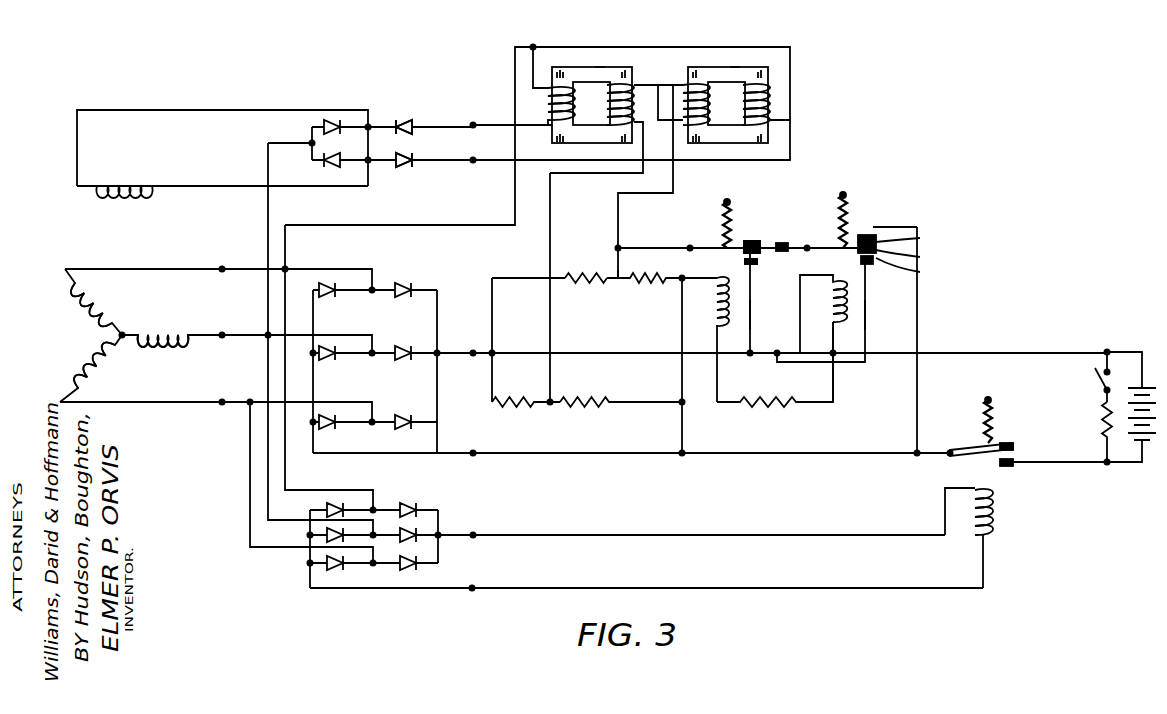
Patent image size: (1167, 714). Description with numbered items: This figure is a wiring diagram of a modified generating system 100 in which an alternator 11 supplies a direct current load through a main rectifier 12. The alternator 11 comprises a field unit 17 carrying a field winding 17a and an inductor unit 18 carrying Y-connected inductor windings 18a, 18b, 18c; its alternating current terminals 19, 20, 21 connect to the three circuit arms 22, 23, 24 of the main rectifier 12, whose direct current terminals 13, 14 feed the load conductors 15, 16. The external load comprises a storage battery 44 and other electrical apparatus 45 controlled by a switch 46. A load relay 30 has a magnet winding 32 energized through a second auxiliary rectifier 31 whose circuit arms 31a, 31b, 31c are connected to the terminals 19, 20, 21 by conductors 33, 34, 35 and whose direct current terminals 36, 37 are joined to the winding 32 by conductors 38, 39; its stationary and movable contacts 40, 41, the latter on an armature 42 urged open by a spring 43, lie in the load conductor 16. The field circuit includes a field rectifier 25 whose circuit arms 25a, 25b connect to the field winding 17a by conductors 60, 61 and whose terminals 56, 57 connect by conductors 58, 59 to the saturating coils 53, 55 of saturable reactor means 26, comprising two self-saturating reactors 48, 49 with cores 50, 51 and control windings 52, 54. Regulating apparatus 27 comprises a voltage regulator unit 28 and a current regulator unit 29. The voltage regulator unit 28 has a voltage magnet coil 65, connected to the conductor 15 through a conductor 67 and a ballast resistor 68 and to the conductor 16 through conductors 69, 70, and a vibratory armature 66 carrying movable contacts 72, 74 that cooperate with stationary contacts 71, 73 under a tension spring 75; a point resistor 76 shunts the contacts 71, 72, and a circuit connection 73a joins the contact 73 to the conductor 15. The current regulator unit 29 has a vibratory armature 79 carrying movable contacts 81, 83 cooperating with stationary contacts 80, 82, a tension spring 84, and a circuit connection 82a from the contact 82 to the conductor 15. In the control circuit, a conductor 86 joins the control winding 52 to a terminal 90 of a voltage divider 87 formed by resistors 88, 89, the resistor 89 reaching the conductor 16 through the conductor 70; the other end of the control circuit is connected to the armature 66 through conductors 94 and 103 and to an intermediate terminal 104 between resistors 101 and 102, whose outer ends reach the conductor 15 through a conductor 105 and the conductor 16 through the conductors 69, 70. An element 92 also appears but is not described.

The alternating current generator 11 is at (160, 269).
The main rectifier 12 is at (375, 370).
The direct current terminal 13 is at (473, 353).
The direct current terminal 14 is at (475, 453).
The load conductor 15 is at (632, 353).
The load conductor 16 is at (613, 453).
The field unit 17 is at (115, 173).
The field winding 17a is at (118, 192).
The inductor unit 18 is at (133, 335).
The inductor winding 18a is at (105, 300).
The inductor winding 18b is at (168, 348).
The inductor winding 18c is at (100, 365).
The alternating current terminal 19 is at (222, 269).
The alternating current terminal 20 is at (222, 335).
The alternating current terminal 21 is at (222, 402).
The circuit arm 22 is at (390, 290).
The circuit arm 23 is at (388, 353).
The circuit arm 24 is at (390, 422).
The field rectifier 25 is at (370, 143).
The circuit arm 25a is at (373, 127).
The circuit arm 25b is at (372, 162).
The saturable reactor means 26 is at (600, 66).
The regulating apparatus 27 is at (816, 313).
The voltage regulator unit 28 is at (733, 305).
The current regulator unit 29 is at (852, 251).
The load relay 30 is at (966, 463).
The second auxiliary rectifier 31 is at (374, 545).
The circuit arm 31a is at (385, 510).
The circuit arm 31b is at (383, 536).
The circuit arm 31c is at (383, 564).
The magnet winding 32 is at (993, 511).
The conductor 33 is at (288, 482).
The conductor 34 is at (268, 488).
The conductor 35 is at (250, 529).
The direct current terminal 36 is at (475, 533).
The direct current terminal 37 is at (475, 587).
The conductor 38 is at (730, 533).
The conductor 39 is at (735, 587).
The stationary switch contact 40 is at (1012, 464).
The movable switch contact 41 is at (1015, 447).
The armature 42 is at (955, 451).
The spring 43 is at (992, 420).
The storage battery 44 is at (1142, 462).
The other electrical apparatus 45 is at (1103, 415).
The switch 46 is at (1098, 375).
The self-saturating reactor 48 is at (592, 105).
The self-saturating reactor 49 is at (728, 105).
The magnetic core 50 is at (600, 67).
The magnetic core 51 is at (735, 72).
The control winding 52 is at (635, 105).
The main load winding 53 is at (548, 100).
The control winding 54 is at (713, 90).
The main load winding 55 is at (772, 105).
The terminal 56 is at (472, 124).
The terminal 57 is at (472, 159).
The conductor 58 is at (477, 125).
The conductor 59 is at (476, 161).
The conductor 60 is at (190, 110).
The conductor 61 is at (197, 186).
The voltage magnet coil 65 is at (717, 310).
The vibratory armature 66 is at (691, 248).
The conductor 67 is at (837, 362).
The ballast resistor 68 is at (750, 403).
The conductor 69 is at (680, 314).
The conductor 70 is at (683, 428).
The stationary contact 71 is at (752, 242).
The movable contact 72 is at (780, 242).
The stationary contact 73 is at (758, 262).
The circuit connection 73a is at (751, 325).
The movable contact 74 is at (783, 246).
The tension spring 75 is at (728, 216).
The point resistor 76 is at (834, 309).
The vibratory armature 79 is at (838, 246).
The stationary contact 80 is at (872, 232).
The movable contact 81 is at (910, 235).
The stationary contact 82 is at (905, 268).
The circuit connection 82a is at (866, 312).
The movable contact 83 is at (912, 255).
The tension spring 84 is at (846, 210).
The conductor 86 is at (551, 212).
The voltage divider 87 is at (530, 405).
The resistor 88 is at (512, 402).
The resistor 89 is at (588, 402).
The terminal 90 is at (550, 402).
The conductor 92 is at (918, 320).
The conductor 94 is at (619, 200).
The modified generating system 100 is at (830, 452).
The resistor 101 is at (596, 278).
The resistor 102 is at (655, 278).
The conductor 103 is at (744, 240).
The intermediate terminal 104 is at (619, 283).
The conductor 105 is at (527, 278).